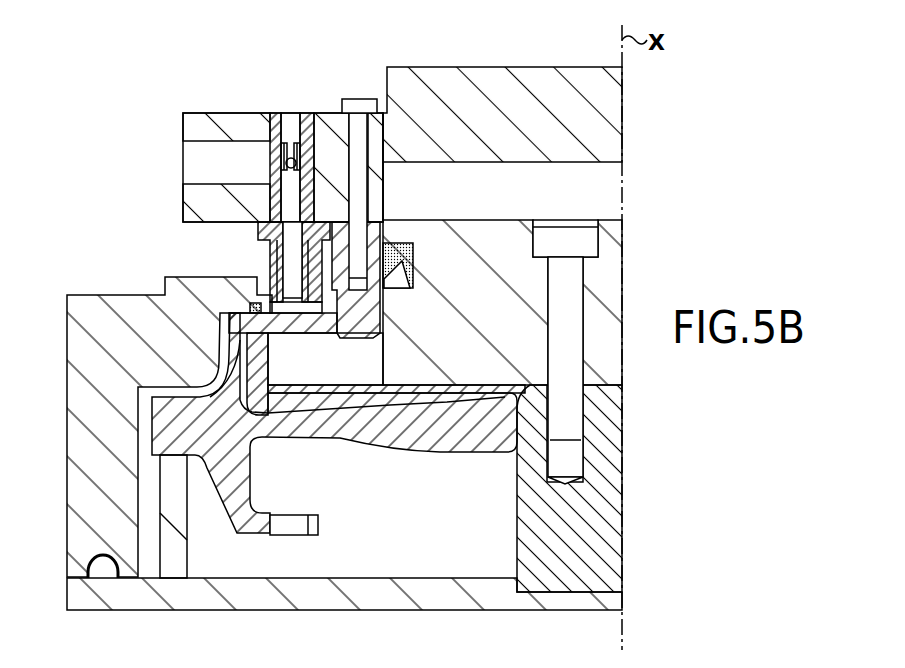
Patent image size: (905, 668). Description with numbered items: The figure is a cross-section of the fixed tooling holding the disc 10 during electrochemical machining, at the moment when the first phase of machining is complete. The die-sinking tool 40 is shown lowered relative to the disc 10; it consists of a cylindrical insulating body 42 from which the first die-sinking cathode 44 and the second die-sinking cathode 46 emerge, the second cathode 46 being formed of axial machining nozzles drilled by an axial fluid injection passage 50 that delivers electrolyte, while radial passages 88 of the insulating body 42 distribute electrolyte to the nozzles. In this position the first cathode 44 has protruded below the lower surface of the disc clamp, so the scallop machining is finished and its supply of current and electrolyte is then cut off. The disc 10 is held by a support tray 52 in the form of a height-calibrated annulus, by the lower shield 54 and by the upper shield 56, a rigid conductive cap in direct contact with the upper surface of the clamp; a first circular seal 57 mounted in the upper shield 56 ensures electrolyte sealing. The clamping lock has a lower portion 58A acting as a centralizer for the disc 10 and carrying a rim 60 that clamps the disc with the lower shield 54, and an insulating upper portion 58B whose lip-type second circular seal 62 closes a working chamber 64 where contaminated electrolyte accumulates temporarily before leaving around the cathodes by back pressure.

The disc 10 is at (333, 446).
The die-sinking tool 40 is at (224, 71).
The cylindrical insulating body 42 is at (531, 74).
The first die-sinking cathode 44 is at (360, 322).
The second die-sinking cathode 46 is at (272, 270).
The axial fluid injection passage 50 is at (290, 114).
The support tray 52 is at (379, 607).
The lower shield 54 is at (294, 398).
The upper shield 56 is at (103, 297).
The first circular seal 57 is at (250, 305).
The lower portion of the clamping lock 58A is at (532, 519).
The upper portion of the clamping lock 58B is at (466, 229).
The rim 60 is at (353, 393).
The second circular seal 62 is at (414, 258).
The closed working chamber 64 is at (324, 372).
The radial passages 88 is at (196, 150).